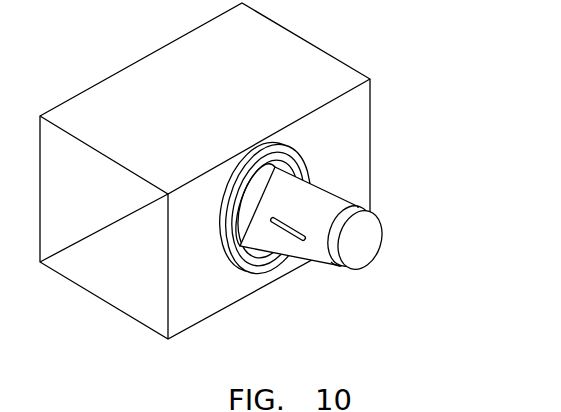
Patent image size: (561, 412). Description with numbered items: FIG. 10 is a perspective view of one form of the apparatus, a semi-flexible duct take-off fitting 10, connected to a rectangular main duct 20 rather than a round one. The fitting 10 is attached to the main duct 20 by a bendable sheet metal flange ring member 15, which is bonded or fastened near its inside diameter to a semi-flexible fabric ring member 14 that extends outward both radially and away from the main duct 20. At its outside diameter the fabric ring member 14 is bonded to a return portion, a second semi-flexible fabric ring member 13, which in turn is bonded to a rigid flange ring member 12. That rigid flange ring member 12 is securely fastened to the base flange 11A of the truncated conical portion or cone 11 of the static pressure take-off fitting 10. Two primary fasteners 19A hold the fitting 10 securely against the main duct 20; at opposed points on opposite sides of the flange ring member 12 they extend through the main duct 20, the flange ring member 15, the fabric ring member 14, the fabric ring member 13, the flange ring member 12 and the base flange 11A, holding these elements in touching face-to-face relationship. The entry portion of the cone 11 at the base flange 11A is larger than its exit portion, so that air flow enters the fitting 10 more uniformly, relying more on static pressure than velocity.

The semi-flexible duct take-off fitting 10 is at (312, 303).
The truncated conical portion 11 is at (300, 265).
The base flange 11A is at (255, 232).
The rigid flange ring member 12 is at (309, 160).
The semi-flexible fabric ring member 13 is at (204, 244).
The semi-flexible fabric ring member 14 is at (223, 274).
The bendable sheet metal flange ring member 15 is at (288, 145).
The primary fastener 19A is at (232, 254).
The main duct 20 is at (272, 284).